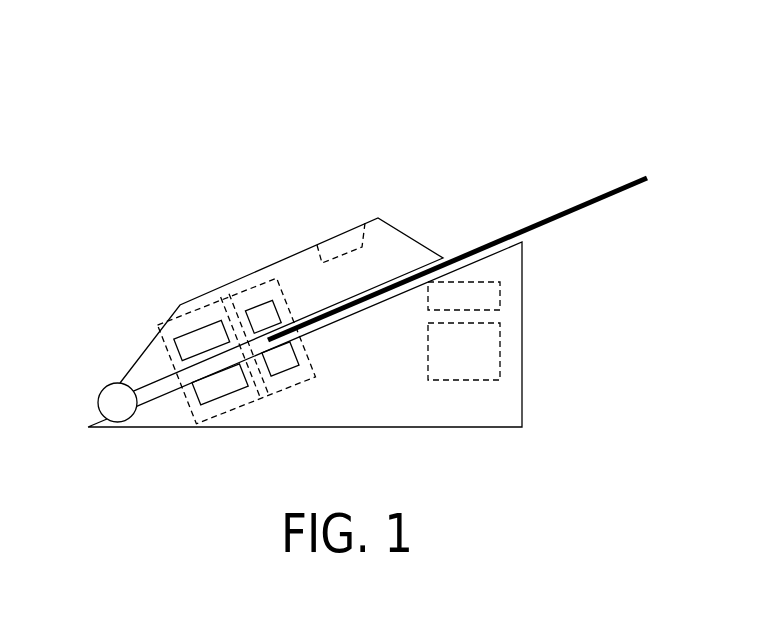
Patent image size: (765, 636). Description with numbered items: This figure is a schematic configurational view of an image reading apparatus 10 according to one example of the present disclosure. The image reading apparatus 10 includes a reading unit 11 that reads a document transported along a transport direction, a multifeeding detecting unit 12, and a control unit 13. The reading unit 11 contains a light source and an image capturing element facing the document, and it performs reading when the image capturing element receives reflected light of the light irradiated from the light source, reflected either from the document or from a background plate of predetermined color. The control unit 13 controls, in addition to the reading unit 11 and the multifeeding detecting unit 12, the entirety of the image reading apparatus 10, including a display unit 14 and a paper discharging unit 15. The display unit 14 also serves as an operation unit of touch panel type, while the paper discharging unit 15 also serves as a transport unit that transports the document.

The image reading apparatus 10 is at (463, 103).
The reading unit 11 is at (177, 306).
The multifeeding detecting unit 12 is at (244, 280).
The control unit 13 is at (500, 358).
The display unit 14 is at (365, 222).
The paper discharging unit 15 is at (500, 298).